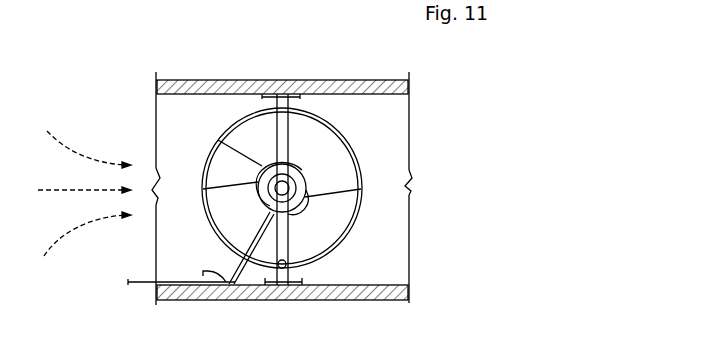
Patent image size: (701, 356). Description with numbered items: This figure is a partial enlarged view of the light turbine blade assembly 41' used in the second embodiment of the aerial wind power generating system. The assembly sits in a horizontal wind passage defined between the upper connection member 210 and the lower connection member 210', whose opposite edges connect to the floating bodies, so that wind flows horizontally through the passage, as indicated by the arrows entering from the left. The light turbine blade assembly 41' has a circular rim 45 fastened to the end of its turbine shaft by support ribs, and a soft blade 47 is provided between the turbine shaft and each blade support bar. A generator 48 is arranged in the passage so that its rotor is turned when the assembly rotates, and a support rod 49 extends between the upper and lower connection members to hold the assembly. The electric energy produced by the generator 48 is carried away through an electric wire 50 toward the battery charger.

The light turbine blade assembly 41' is at (312, 188).
The upper connection member 210 is at (282, 64).
The lower connection member 210' is at (282, 318).
The circular rim 45 is at (331, 130).
The soft blade 47 is at (296, 165).
The generator 48 is at (218, 140).
The support rod 49 is at (279, 138).
The electric wire 50 is at (200, 286).